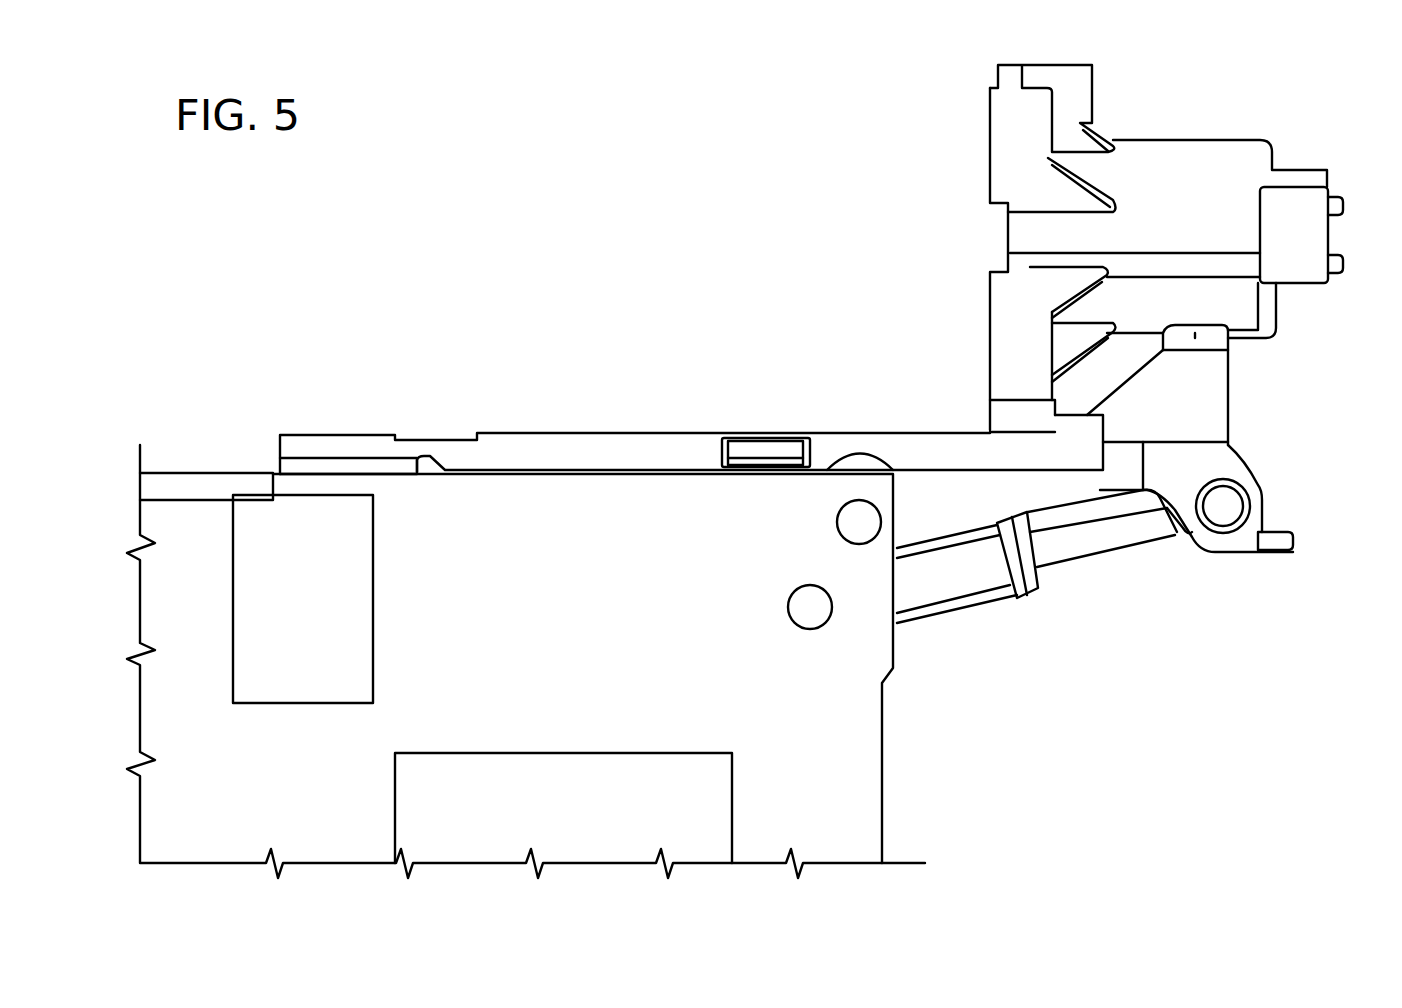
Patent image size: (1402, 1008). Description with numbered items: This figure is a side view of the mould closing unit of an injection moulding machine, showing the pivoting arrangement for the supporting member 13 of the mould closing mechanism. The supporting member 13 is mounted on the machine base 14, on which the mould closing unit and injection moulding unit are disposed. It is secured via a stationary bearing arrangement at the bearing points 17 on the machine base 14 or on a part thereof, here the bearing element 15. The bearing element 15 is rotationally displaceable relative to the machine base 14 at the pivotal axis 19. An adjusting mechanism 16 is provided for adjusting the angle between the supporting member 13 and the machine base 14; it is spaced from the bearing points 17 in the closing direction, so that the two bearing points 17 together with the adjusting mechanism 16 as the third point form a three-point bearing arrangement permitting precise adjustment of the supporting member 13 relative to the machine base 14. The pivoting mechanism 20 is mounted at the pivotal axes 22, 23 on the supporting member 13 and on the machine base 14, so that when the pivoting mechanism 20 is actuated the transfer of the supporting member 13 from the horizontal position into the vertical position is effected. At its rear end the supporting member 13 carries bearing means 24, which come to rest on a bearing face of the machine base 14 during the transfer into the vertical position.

The supporting member 13 is at (1177, 170).
The machine base 14 is at (545, 626).
The bearing element 15 is at (923, 450).
The adjusting mechanism 16 is at (1208, 356).
The bearing points 17 is at (1013, 413).
The pivotal axis 19 is at (865, 530).
The pivoting mechanism 20 is at (1090, 537).
The pivotal axis 22 is at (1213, 507).
The pivotal axis 23 is at (813, 608).
The bearing means 24 is at (1272, 530).